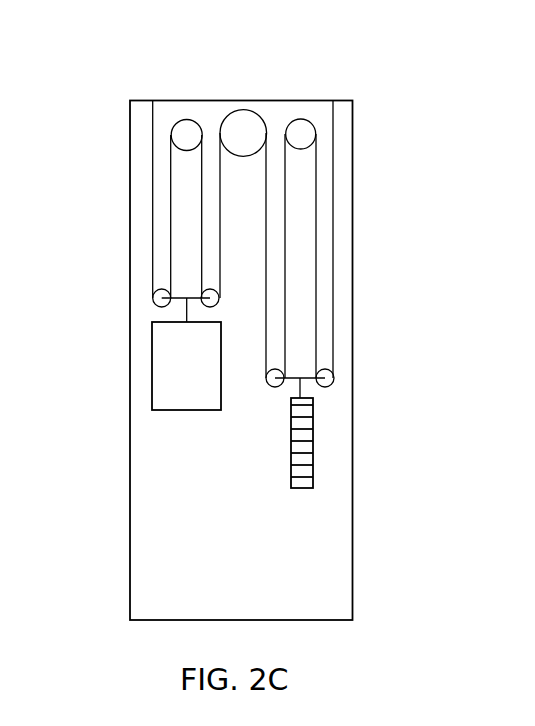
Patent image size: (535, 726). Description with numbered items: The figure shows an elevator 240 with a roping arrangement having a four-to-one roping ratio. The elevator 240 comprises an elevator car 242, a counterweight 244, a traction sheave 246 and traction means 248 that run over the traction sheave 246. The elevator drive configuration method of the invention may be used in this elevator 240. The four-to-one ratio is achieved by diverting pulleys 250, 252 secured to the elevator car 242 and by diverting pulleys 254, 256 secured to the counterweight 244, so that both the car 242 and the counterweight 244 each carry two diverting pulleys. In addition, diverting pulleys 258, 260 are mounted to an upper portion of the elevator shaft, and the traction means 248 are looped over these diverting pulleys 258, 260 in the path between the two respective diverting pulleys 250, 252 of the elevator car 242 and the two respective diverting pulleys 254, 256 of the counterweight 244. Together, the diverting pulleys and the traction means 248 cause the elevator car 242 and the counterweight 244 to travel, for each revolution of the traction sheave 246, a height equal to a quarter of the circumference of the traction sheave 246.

The elevator 240 is at (353, 580).
The elevator car 242 is at (187, 410).
The counterweight 244 is at (300, 488).
The traction sheave 246 is at (248, 108).
The traction means 248 is at (333, 250).
The diverting pulley 250 is at (155, 298).
The diverting pulley 252 is at (203, 292).
The diverting pulley 254 is at (272, 387).
The diverting pulley 256 is at (334, 372).
The diverting pulley 258 is at (187, 118).
The diverting pulley 260 is at (300, 118).